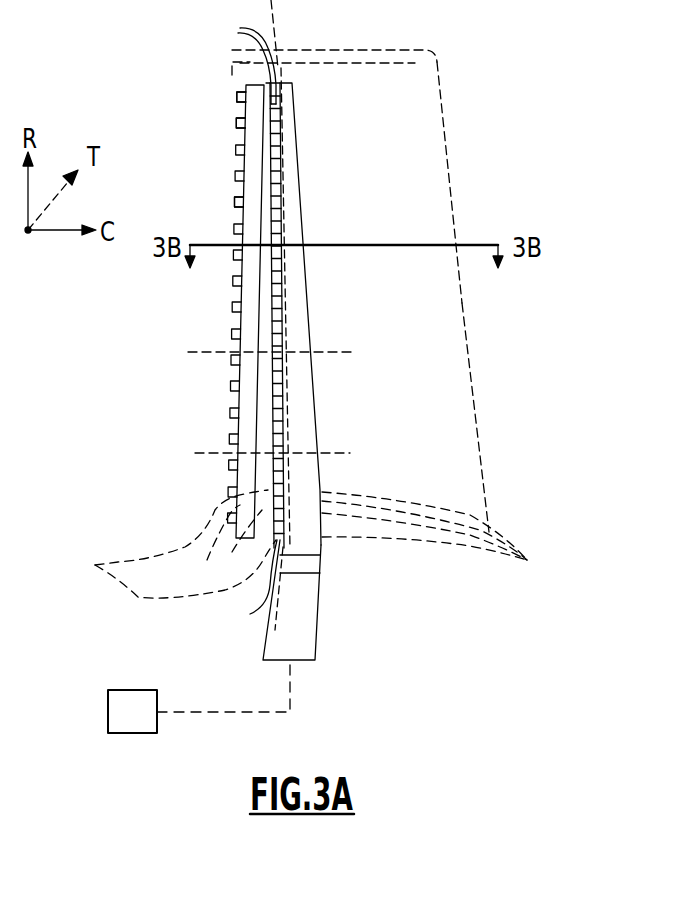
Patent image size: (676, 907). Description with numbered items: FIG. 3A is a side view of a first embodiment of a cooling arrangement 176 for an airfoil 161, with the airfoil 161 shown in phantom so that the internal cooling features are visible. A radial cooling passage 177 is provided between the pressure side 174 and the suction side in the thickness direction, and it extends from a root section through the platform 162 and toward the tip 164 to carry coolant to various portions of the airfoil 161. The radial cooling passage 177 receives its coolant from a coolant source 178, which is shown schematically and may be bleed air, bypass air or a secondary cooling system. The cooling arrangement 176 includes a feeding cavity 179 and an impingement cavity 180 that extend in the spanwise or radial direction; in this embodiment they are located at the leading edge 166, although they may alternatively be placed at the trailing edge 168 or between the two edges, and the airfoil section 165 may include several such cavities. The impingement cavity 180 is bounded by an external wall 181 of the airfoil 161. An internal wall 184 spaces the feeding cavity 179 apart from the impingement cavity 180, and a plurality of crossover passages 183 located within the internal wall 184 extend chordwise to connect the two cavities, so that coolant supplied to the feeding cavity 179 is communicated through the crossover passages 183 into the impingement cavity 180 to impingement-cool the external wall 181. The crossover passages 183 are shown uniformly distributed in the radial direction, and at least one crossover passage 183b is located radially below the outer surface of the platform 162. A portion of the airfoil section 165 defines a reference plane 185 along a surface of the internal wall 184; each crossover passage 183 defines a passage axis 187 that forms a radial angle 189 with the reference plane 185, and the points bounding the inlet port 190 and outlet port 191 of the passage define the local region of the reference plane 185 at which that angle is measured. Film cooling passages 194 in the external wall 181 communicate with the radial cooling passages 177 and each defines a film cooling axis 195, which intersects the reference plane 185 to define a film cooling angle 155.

The airfoil 161 is at (153, 80).
The crossover passages 183 is at (238, 33).
The cooling arrangement 176 is at (322, 85).
The tip 164 is at (389, 56).
The trailing edge 168 is at (448, 170).
The pressure side 174 is at (452, 370).
The external wall 181 is at (245, 109).
The impingement cavity 180 is at (245, 124).
The internal wall 184 is at (284, 141).
The feeding cavity 179 is at (291, 165).
The inlet port 190 is at (292, 186).
The outlet port 191 is at (244, 192).
The leading edge 166 is at (243, 232).
The airfoil section 165 is at (241, 306).
The passage axis 187 is at (198, 350).
The radial angle 189 is at (277, 372).
The film cooling passages 194 is at (248, 432).
The film cooling axis 195 is at (346, 452).
The film cooling angle 155 is at (277, 463).
The platform 162 is at (125, 588).
The crossover passage 183b is at (256, 614).
The reference plane 185 is at (318, 578).
The radial cooling passage 177 is at (318, 623).
The coolant source 178 is at (108, 712).